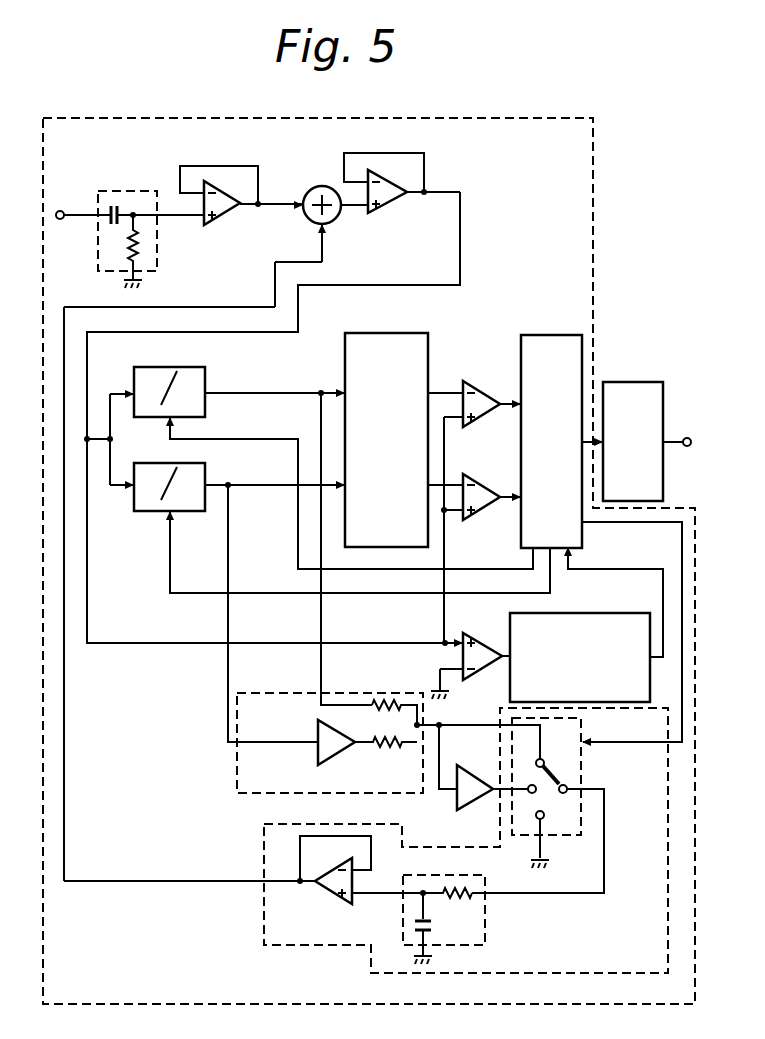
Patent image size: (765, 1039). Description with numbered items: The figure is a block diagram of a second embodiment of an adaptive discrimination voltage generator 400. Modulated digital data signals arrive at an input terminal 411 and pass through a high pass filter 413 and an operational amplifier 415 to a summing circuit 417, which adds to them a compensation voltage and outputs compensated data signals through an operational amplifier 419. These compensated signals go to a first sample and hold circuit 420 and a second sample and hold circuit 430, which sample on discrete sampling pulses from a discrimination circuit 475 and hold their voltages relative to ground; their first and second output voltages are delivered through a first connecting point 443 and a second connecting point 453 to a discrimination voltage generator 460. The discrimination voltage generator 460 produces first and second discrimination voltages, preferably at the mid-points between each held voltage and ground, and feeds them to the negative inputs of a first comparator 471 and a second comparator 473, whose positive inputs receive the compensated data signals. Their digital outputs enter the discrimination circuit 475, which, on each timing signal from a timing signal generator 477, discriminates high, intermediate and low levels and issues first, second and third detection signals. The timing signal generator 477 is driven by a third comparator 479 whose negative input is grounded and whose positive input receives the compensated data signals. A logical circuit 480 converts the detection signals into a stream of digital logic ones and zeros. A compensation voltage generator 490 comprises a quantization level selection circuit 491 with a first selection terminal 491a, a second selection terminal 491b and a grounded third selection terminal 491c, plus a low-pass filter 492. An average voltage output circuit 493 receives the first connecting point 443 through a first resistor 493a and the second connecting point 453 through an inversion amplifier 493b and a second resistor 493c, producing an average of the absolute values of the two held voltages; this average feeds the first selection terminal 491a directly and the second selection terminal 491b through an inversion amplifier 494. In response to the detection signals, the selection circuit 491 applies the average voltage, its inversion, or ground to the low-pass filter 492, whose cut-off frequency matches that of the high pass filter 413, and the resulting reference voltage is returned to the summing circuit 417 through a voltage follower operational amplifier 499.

The adaptive discrimination voltage generator 400 is at (203, 116).
The input terminal 411 is at (60, 211).
The high pass filter 413 is at (113, 180).
The operational amplifier 415 is at (220, 220).
The summing circuit 417 is at (312, 190).
The operational amplifier 419 is at (390, 204).
The first sample and hold circuit 420 is at (196, 368).
The second sample and hold circuit 430 is at (196, 464).
The first connecting point 443 is at (318, 393).
The second connecting point 453 is at (233, 487).
The discrimination voltage generator 460 is at (372, 333).
The first comparator 471 is at (468, 384).
The second comparator 473 is at (490, 513).
The discrimination circuit 475 is at (536, 335).
The timing signal generator 477 is at (564, 613).
The third comparator 479 is at (482, 632).
The logical circuit 480 is at (626, 382).
The compensation voltage generator 490 is at (262, 831).
The quantization level selection circuit 491 is at (573, 802).
The first selection terminal 491a is at (545, 758).
The second selection terminal 491b is at (548, 794).
The third selection terminal 491c is at (548, 822).
The low-pass filter 492 is at (497, 935).
The average voltage output circuit 493 is at (250, 690).
The first resistor 493a is at (380, 702).
The inversion amplifier 493b is at (316, 750).
The second resistor 493c is at (385, 748).
The inversion amplifier 494 is at (474, 806).
The voltage follower operational amplifier 499 is at (330, 892).